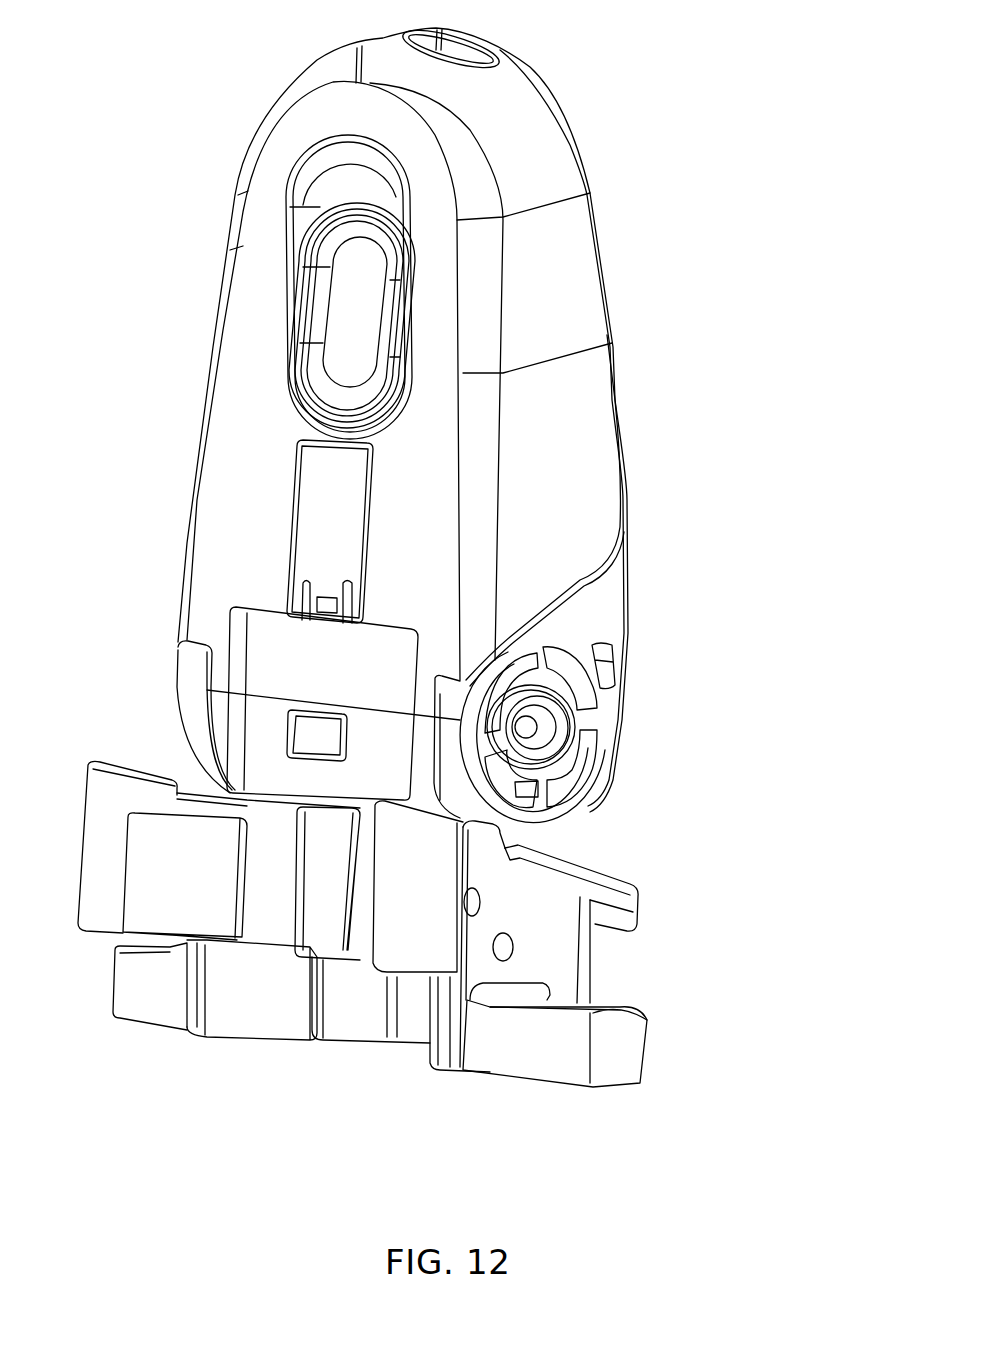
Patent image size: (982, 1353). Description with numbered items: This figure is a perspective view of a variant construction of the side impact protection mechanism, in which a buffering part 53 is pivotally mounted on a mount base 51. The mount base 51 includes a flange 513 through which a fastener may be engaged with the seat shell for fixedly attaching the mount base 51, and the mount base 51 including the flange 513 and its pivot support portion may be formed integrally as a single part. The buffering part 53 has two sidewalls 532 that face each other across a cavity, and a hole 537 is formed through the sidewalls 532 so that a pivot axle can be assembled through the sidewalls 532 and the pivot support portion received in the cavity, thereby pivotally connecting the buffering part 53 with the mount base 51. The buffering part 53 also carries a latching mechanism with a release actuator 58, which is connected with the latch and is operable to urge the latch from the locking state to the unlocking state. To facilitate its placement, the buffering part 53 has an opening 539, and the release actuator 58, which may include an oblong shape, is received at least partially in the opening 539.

The buffering part 53 is at (567, 463).
The opening 539 is at (367, 190).
The release actuator 58 is at (340, 303).
The sidewalls 532 is at (178, 720).
The hole 537 is at (547, 738).
The mount base 51 is at (553, 938).
The flange 513 is at (613, 1070).